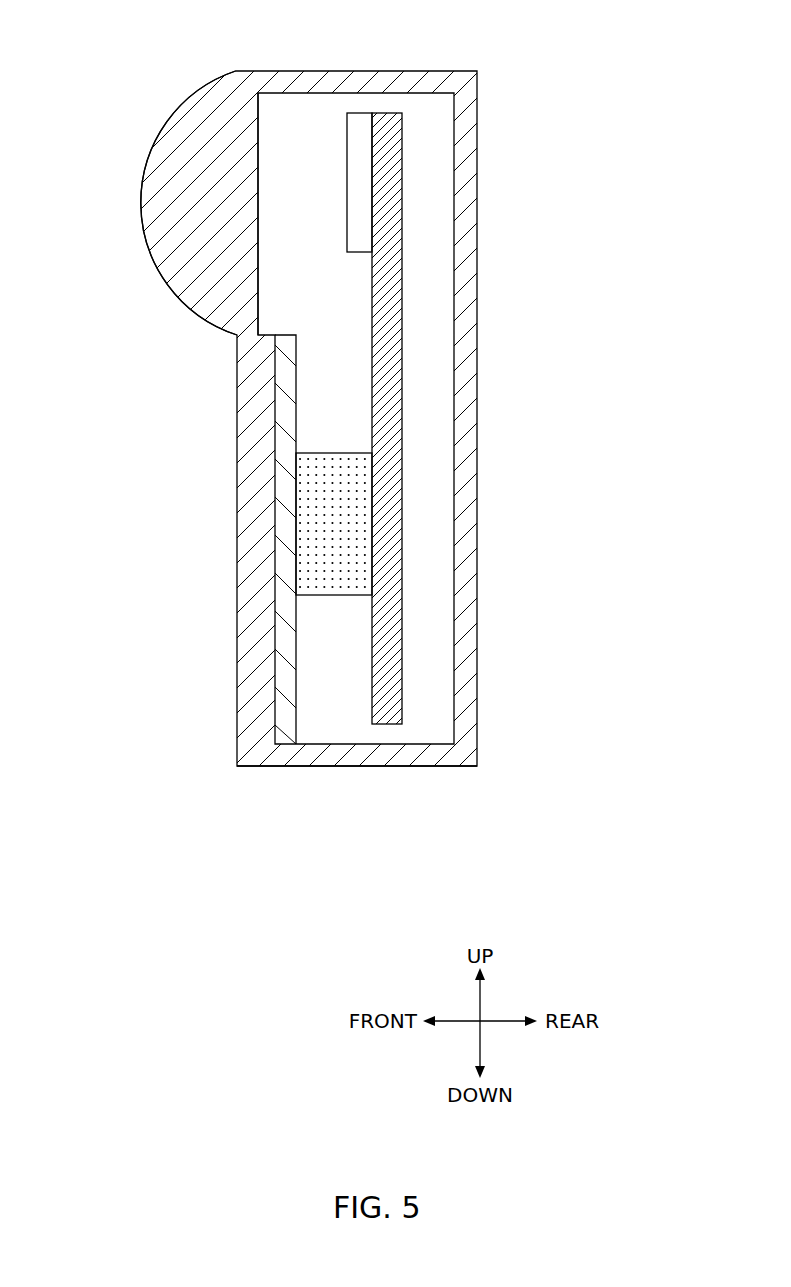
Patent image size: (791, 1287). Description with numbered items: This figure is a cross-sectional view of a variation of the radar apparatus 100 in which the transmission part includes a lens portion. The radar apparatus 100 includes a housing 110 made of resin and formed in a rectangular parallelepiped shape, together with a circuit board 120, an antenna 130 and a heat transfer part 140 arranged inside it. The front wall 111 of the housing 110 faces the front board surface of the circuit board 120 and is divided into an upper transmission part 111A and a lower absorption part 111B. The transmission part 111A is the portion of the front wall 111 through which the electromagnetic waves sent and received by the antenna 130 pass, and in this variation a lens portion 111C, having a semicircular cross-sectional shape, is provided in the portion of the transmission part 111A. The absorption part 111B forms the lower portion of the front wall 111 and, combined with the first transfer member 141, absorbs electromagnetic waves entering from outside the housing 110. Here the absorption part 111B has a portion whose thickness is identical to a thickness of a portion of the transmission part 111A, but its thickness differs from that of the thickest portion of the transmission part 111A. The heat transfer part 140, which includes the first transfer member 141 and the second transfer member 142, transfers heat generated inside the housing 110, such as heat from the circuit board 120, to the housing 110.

The radar apparatus 100 is at (596, 77).
The housing 110 is at (497, 70).
The front wall 111 is at (237, 382).
The transmission part 111A is at (258, 187).
The absorption part 111B is at (247, 700).
The lens portion 111C is at (150, 193).
The circuit board 120 is at (398, 126).
The antenna 130 is at (360, 122).
The heat transfer part 140 is at (338, 707).
The first transfer member 141 is at (287, 665).
The second transfer member 142 is at (342, 477).